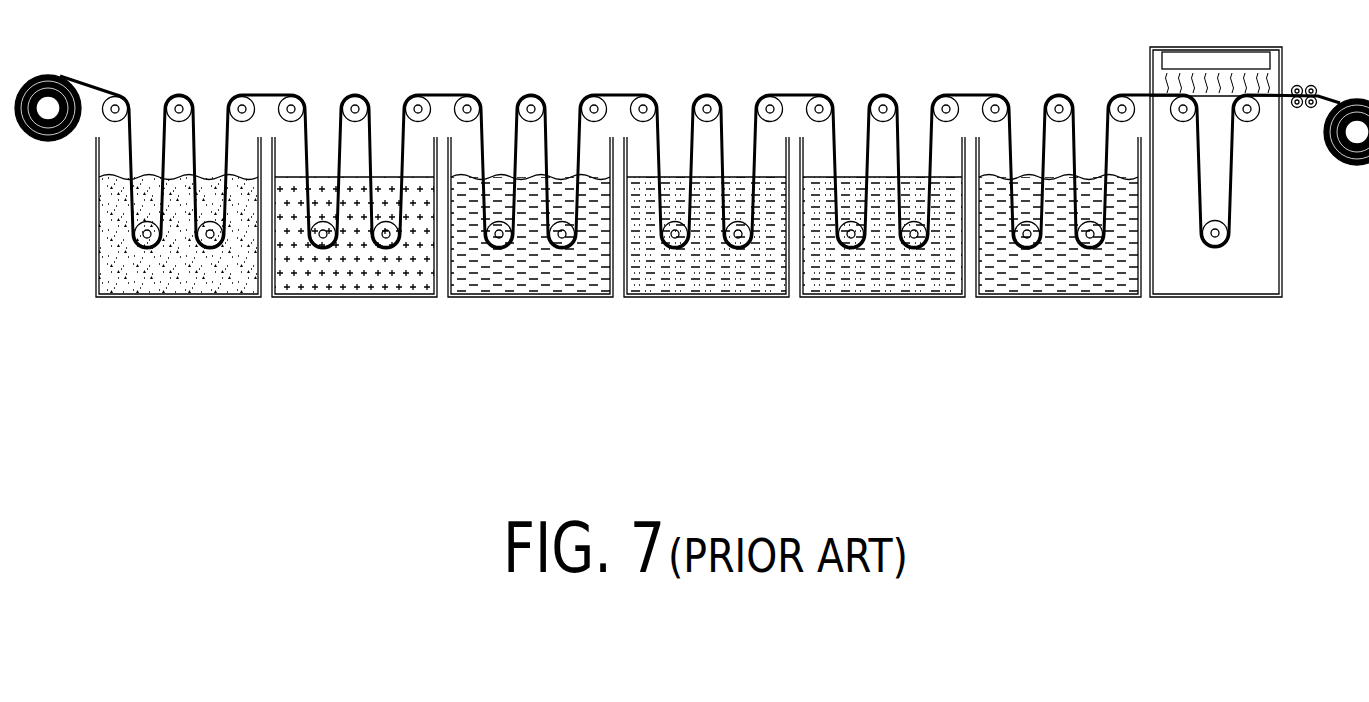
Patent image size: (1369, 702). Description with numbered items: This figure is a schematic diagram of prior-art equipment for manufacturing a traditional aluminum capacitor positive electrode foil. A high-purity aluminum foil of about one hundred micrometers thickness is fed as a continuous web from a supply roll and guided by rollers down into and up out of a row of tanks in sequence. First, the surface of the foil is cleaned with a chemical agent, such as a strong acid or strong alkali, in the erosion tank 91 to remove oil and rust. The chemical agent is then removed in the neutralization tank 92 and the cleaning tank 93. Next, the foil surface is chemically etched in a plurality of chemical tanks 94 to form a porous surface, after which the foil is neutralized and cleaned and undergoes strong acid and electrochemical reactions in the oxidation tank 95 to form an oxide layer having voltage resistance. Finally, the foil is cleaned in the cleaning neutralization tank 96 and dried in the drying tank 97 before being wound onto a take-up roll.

The erosion tank 91 is at (193, 285).
The neutralization tank 92 is at (350, 283).
The cleaning tank 93 is at (520, 283).
The chemical tank 94 is at (710, 278).
The oxidation tank 95 is at (884, 277).
The cleaning neutralization tank 96 is at (1070, 280).
The drying tank 97 is at (1220, 280).